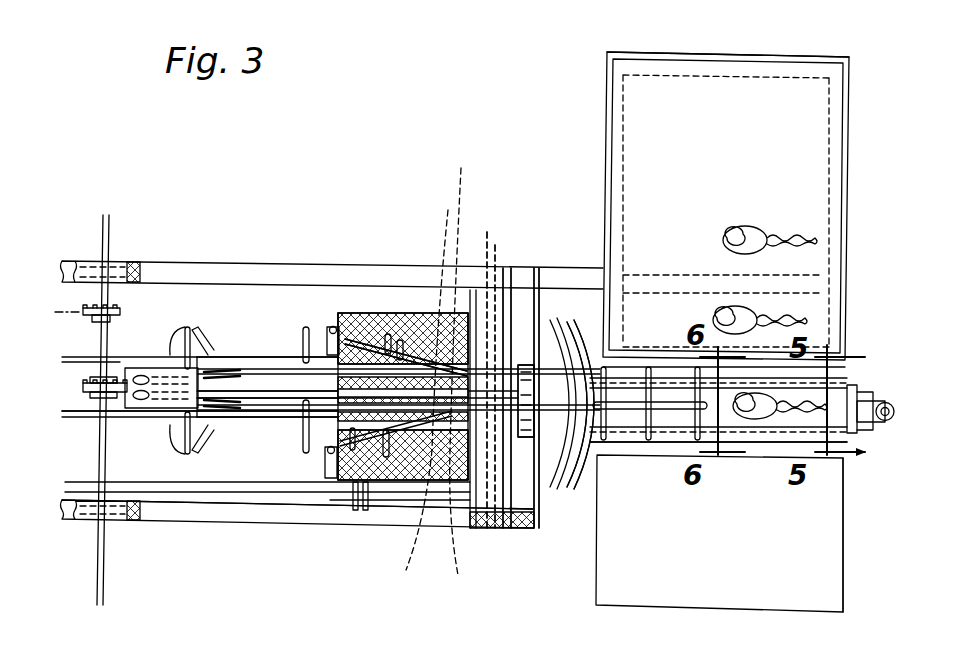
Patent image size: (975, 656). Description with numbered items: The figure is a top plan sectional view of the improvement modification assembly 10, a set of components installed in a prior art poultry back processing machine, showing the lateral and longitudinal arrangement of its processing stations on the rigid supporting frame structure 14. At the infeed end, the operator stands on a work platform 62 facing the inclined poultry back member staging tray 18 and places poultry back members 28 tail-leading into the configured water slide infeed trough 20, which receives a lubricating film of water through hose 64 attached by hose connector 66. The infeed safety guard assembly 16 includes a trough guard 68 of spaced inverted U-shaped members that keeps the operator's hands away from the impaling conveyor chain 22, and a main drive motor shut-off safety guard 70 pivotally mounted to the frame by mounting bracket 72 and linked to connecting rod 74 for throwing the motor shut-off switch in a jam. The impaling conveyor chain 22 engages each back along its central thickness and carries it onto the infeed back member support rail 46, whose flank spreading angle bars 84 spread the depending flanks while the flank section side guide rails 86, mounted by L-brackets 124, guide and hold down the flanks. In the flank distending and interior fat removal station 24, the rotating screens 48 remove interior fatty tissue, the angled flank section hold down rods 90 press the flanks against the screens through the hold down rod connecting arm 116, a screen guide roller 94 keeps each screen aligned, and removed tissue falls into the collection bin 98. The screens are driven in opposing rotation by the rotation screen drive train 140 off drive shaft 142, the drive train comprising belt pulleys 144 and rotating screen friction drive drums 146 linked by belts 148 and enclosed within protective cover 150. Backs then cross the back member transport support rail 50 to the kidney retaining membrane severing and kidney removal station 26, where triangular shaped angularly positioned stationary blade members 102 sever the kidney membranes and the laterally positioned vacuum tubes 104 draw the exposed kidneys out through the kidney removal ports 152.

The improvement modification assembly 10 is at (410, 118).
The rigid supporting frame structure 14 is at (356, 162).
The infeed safety guard assembly 16 is at (572, 552).
The poultry back member staging tray 18 is at (720, 52).
The configured water slide infeed trough 20 is at (762, 445).
The impaling conveyor chain 22 is at (128, 378).
The poultry back member flank distending and interior fat removal station 24 is at (437, 282).
The kidney retaining membrane severing and kidney removal station 26 is at (133, 431).
The poultry back members 28 is at (757, 225).
The infeed back member support rail 46 is at (539, 505).
The rotating screens 48 is at (346, 316).
The back member transport support rail 50 is at (259, 378).
The work platform 62 is at (843, 528).
The hose 64 is at (866, 404).
The hose connector 66 is at (866, 400).
The trough guard 68 is at (620, 410).
The main drive motor shut-off safety guard 70 is at (583, 352).
The mounting bracket 72 is at (528, 364).
The connecting rod 74 is at (552, 318).
The flank spreading angle bars 84 is at (505, 300).
The flank section side guide rails 86 is at (282, 356).
The angled flank section hold down rods 90 is at (381, 317).
The screen guide roller 94 is at (332, 326).
The collection bin 98 is at (356, 313).
The triangular shaped angularly positioned stationary blade members 102 is at (197, 372).
The vacuum tubes 104 is at (189, 325).
The hold down rod connecting arm 116 is at (400, 345).
The L-brackets 124 is at (281, 330).
The rotation screen drive train 140 is at (475, 562).
The drive shaft 142 is at (213, 500).
The belt pulleys 144 is at (487, 232).
The rotating screen friction drive drums 146 is at (448, 210).
The belts 148 is at (497, 245).
The protective cover 150 is at (507, 527).
The kidney removal ports 152 is at (138, 372).